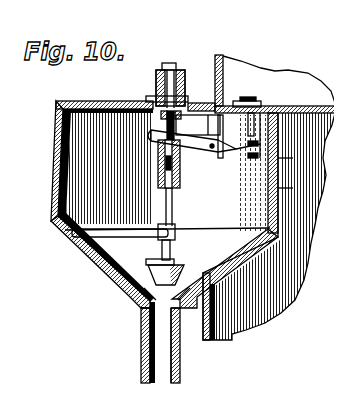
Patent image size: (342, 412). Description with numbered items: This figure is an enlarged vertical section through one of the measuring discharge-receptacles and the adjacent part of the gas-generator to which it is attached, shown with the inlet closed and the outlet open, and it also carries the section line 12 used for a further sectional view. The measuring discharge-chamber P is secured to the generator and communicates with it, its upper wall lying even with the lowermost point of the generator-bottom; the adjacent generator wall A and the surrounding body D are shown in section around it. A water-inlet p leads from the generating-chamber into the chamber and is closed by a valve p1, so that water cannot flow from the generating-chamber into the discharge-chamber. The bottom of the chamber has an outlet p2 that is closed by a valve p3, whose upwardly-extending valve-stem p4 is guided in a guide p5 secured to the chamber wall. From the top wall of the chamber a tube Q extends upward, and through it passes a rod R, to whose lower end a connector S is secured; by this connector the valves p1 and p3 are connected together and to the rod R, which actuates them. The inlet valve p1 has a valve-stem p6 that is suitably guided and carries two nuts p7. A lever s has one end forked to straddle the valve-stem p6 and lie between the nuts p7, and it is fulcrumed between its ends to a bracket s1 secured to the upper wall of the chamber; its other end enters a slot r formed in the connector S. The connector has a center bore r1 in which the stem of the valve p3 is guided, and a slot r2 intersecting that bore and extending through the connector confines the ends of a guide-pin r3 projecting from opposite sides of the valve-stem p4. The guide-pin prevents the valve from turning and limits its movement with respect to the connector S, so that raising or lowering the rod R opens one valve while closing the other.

The section line 12 12 is at (161, 55).
The casing body D is at (278, 67).
The wall A is at (209, 48).
The tube Q is at (175, 88).
The rod R is at (148, 76).
The valve p1 is at (256, 93).
The slot r is at (150, 117).
The center bore r1 is at (156, 163).
The slot r2 is at (150, 172).
The guide-pin r3 is at (173, 181).
The bracket s1 is at (193, 133).
The connector S is at (180, 160).
The lever s is at (218, 148).
The water-inlet p is at (217, 120).
The valve-stem p6 is at (278, 172).
The nuts p7 is at (280, 193).
The measuring discharge-chamber P is at (167, 217).
The guide p5 is at (152, 217).
The valve-stem p4 is at (168, 241).
The valve p3 is at (120, 266).
The outlet p2 is at (132, 290).